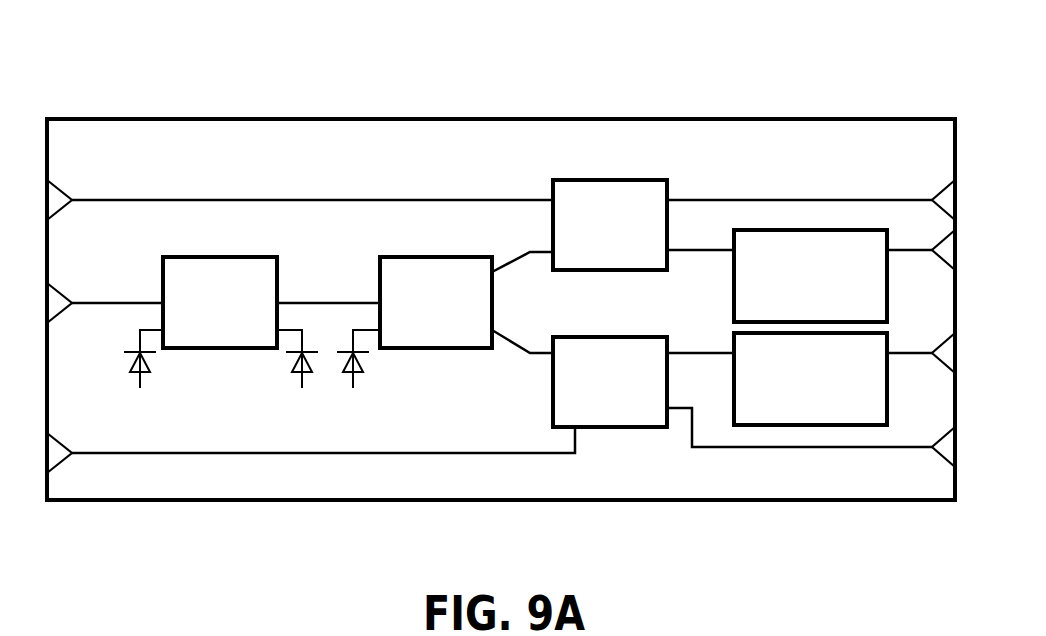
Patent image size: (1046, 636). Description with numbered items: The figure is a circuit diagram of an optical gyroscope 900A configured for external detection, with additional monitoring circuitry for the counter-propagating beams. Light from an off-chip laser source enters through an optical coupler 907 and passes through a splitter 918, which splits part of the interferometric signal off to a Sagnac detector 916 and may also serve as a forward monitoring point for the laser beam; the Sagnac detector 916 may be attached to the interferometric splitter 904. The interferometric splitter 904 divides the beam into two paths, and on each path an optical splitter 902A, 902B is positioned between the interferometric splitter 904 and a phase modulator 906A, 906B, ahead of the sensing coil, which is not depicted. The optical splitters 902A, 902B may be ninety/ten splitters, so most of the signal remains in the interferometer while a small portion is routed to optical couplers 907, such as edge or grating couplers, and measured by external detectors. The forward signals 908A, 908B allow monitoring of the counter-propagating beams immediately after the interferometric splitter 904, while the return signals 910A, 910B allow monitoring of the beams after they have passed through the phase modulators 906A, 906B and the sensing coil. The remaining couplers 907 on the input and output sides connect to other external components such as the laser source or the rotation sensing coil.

The optical gyroscope 900A is at (808, 47).
The optical splitter 902A is at (672, 185).
The optical splitter 902B is at (628, 429).
The interferometric splitter 904 is at (440, 350).
The phase modulator 906A is at (790, 229).
The phase modulator 906B is at (813, 427).
The optical coupler 907 is at (58, 212).
The forward signal 908A is at (852, 199).
The forward signal 908B is at (905, 449).
The return signal 910A is at (112, 198).
The return signal 910B is at (128, 455).
The Sagnac detector 916 is at (147, 358).
The splitter 918 is at (283, 262).